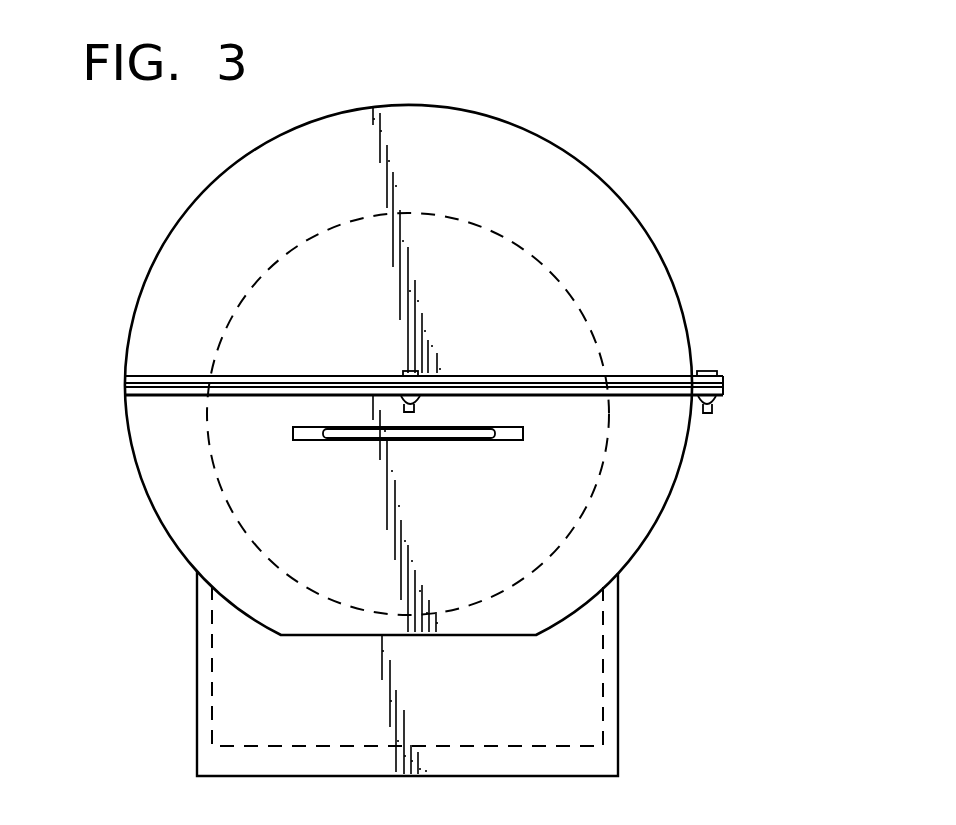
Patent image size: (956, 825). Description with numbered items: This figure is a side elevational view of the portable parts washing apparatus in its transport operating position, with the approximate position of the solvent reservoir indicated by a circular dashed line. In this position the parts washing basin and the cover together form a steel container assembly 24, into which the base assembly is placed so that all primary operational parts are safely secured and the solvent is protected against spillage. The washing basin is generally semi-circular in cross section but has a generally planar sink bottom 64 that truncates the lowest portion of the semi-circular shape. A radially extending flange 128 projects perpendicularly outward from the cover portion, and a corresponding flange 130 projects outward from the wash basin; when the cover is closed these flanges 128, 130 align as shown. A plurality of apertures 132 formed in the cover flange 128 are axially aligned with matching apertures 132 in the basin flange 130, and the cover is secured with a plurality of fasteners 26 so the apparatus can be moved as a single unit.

The container assembly 24 is at (608, 183).
The fasteners 26 is at (415, 372).
The sink bottom 64 is at (313, 636).
The radially extending flange 128 is at (165, 375).
The washing basin flange 130 is at (165, 395).
The apertures 132 is at (404, 373).